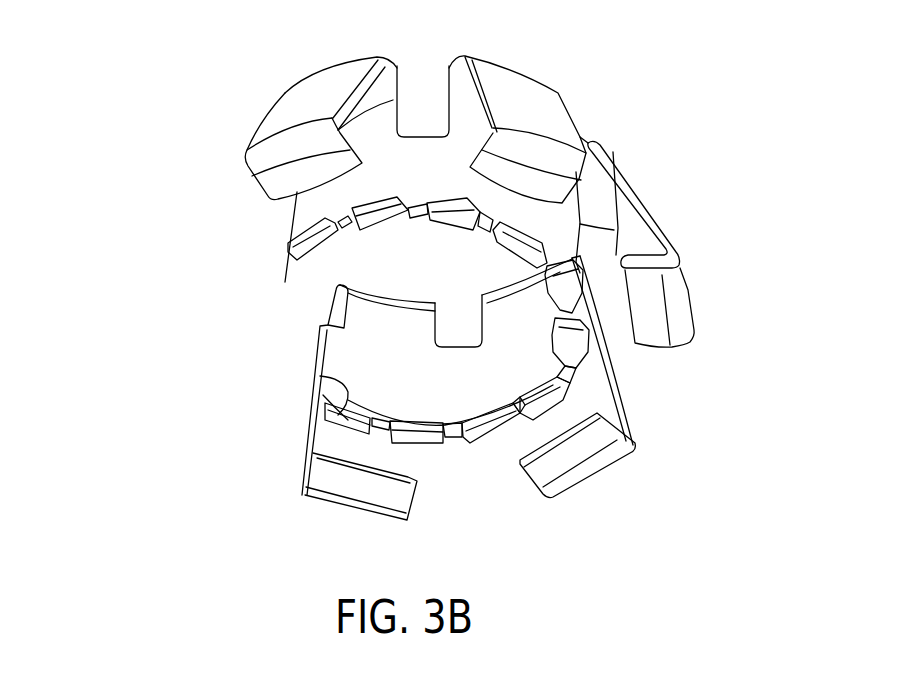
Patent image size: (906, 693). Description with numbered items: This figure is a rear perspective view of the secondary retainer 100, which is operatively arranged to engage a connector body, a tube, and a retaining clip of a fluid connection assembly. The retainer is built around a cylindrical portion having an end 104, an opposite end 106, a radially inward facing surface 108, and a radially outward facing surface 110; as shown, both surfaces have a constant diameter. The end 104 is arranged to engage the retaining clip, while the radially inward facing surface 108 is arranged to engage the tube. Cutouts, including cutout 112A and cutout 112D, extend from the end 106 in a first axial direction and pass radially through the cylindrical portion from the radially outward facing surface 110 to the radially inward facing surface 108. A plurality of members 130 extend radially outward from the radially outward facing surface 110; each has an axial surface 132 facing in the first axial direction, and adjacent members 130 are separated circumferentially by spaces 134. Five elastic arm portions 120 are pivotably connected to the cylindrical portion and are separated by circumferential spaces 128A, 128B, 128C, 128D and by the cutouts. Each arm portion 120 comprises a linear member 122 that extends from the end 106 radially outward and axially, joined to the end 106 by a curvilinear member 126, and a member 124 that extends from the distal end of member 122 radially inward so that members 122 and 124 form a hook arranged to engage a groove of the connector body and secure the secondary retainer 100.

The secondary retainer 100 is at (112, 117).
The end 104 is at (320, 376).
The end 106 is at (377, 307).
The radially inward facing surface 108 is at (466, 368).
The radially outward facing surface 110 is at (317, 204).
The cutout 112A is at (457, 337).
The cutout 112D is at (420, 110).
The arm portion 120 is at (332, 468).
The member 122 is at (643, 202).
The member 124 is at (637, 288).
The curvilinear member 126 is at (604, 140).
The circumferential space 128A is at (463, 458).
The circumferential space 128B is at (630, 358).
The circumferential space 128C is at (662, 160).
The circumferential space 128D is at (457, 113).
The member 130 is at (328, 420).
The axial surface 132 is at (298, 205).
The space 134 is at (455, 447).